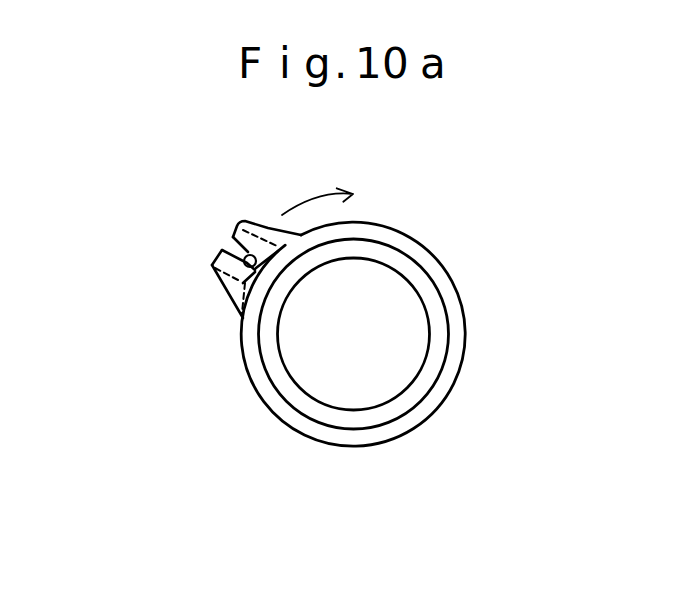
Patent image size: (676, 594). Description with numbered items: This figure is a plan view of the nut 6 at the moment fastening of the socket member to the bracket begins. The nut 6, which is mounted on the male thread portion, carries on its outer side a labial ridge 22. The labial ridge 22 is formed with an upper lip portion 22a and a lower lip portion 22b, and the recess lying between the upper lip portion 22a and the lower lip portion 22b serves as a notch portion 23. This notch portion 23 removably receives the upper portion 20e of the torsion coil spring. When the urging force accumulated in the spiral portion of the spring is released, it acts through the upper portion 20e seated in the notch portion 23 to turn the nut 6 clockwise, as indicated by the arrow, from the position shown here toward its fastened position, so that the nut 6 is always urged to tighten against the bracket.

The nut 6 is at (431, 239).
The labial ridge 22 is at (211, 230).
The upper lip portion 22a is at (252, 233).
The lower lip portion 22b is at (213, 269).
The notch portion 23 is at (247, 251).
The upper portion of the torsion coil spring 20e is at (240, 297).